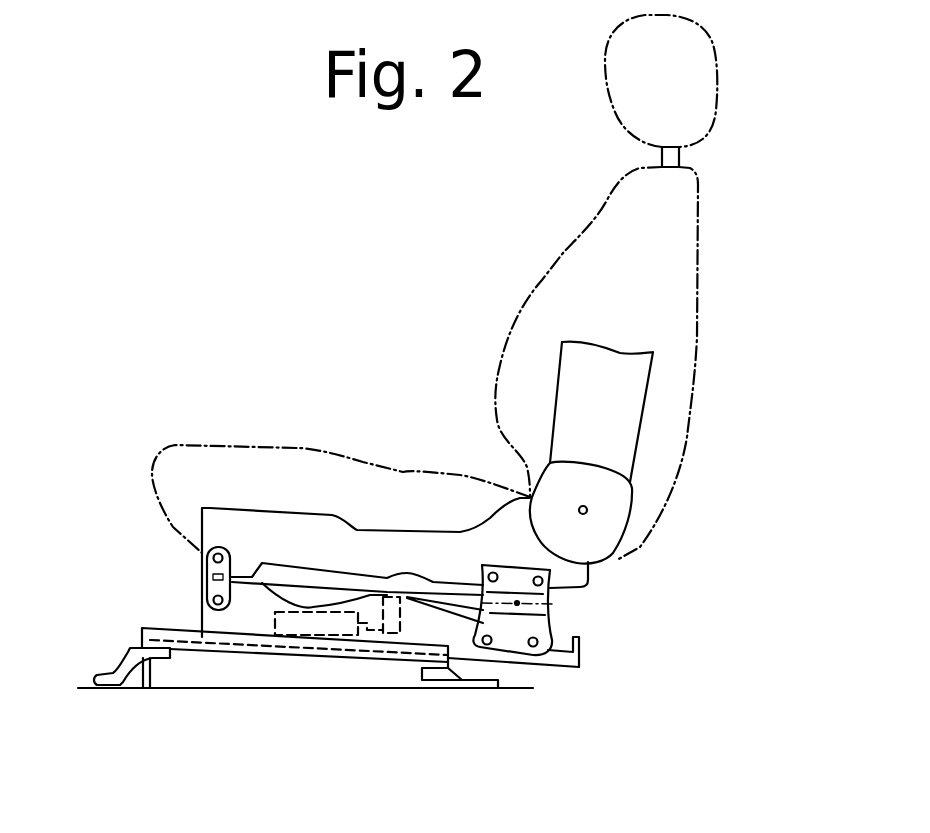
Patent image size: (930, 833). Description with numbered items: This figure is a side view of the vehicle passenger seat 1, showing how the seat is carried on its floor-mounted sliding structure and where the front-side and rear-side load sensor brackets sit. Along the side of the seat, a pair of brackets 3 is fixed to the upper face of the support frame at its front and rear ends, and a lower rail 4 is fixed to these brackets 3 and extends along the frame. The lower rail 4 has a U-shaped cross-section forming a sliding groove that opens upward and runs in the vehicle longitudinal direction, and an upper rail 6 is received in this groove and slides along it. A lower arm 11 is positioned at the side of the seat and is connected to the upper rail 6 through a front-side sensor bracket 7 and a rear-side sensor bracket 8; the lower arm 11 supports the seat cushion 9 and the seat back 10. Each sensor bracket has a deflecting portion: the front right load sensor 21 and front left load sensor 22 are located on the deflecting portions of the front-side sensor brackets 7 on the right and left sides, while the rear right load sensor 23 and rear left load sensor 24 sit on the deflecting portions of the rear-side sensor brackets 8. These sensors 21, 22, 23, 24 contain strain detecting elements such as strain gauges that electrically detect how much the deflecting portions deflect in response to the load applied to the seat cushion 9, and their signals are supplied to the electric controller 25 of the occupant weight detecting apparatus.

The seat 1 is at (490, 333).
The brackets 3 is at (98, 675).
The lower rail 4 is at (142, 628).
The upper rail 6 is at (560, 667).
The front-side sensor bracket 7 is at (203, 550).
The rear-side sensor bracket 8 is at (512, 567).
The seat cushion 9 is at (227, 443).
The seat back 10 is at (695, 312).
The lower arm 11 is at (315, 515).
The front right load sensor 21 is at (272, 571).
The front left load sensor 22 is at (207, 577).
The rear right load sensor 23 is at (601, 610).
The rear left load sensor 24 is at (555, 608).
The electric controller 25 is at (273, 620).